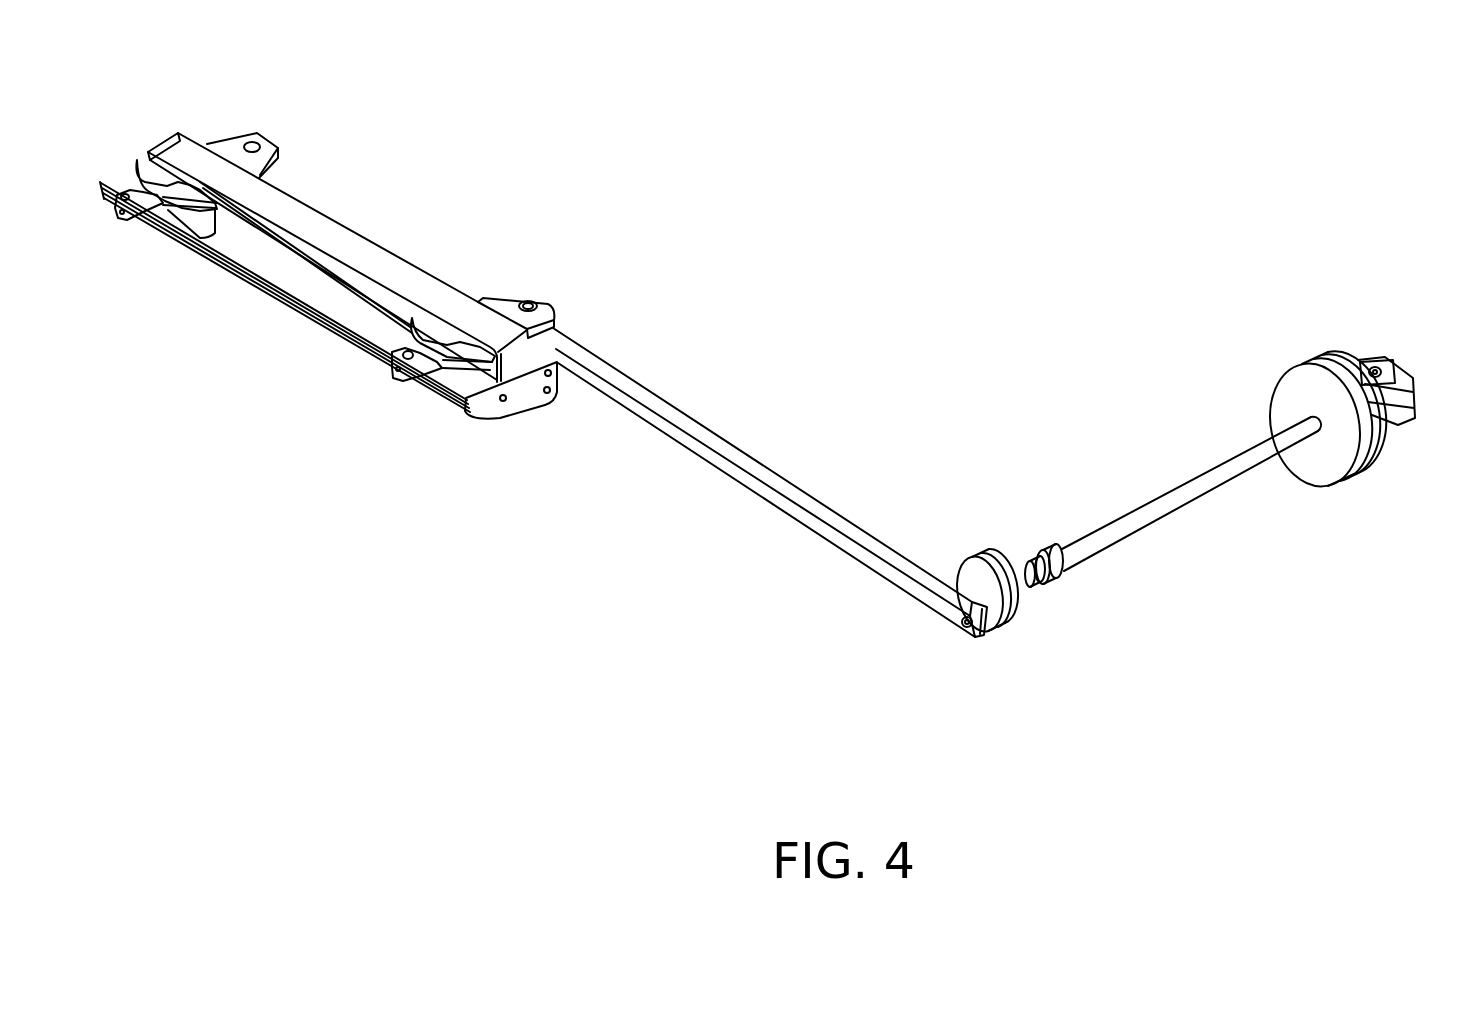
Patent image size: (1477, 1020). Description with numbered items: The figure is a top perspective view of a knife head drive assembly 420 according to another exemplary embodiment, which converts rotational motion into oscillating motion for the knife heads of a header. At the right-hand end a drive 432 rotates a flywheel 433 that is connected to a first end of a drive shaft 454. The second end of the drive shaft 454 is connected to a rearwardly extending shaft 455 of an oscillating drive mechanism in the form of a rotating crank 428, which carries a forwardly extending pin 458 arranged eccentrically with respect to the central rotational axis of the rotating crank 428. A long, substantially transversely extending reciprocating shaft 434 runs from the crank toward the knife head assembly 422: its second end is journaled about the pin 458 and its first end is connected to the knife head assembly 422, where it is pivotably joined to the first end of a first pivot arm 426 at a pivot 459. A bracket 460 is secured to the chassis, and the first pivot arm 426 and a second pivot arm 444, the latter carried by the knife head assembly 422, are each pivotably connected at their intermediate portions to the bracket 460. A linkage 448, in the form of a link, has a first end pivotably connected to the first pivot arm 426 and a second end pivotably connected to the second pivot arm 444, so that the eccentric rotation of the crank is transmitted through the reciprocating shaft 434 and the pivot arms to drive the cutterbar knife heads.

The knife head drive assembly 420 is at (741, 356).
The knife head assembly 422 is at (366, 186).
The first pivot arm 426 is at (557, 318).
The rotating crank 428 is at (1020, 610).
The drive 432 is at (1393, 425).
The flywheel 433 is at (1370, 455).
The reciprocating shaft 434 is at (787, 478).
The second pivot arm 444 is at (230, 140).
The linkage 448 is at (300, 260).
The drive shaft 454 is at (1180, 505).
The rearwardly extending shaft 455 is at (1028, 582).
The pin 458 is at (963, 622).
The pivot 459 is at (529, 302).
The bracket 460 is at (520, 365).